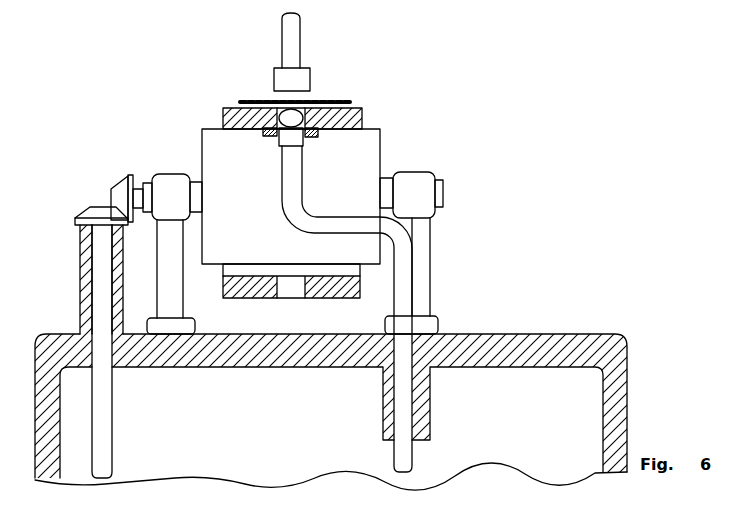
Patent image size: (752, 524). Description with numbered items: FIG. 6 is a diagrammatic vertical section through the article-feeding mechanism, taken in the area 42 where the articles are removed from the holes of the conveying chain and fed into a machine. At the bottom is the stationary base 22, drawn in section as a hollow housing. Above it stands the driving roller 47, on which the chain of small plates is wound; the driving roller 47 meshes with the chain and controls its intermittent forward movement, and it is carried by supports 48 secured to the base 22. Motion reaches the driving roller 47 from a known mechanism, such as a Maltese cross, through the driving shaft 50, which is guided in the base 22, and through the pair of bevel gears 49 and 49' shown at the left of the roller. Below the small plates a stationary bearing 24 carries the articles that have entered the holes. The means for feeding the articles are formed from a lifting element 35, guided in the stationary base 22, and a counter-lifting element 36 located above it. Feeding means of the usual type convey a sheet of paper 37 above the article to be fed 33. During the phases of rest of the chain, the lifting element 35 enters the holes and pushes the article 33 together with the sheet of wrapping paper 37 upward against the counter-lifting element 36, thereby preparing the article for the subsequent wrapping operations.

The stationary base 22 is at (527, 343).
The stationary bearing 24 is at (269, 138).
The article to be fed 33 is at (300, 106).
The lifting element 35 is at (296, 194).
The counter-lifting element 36 is at (292, 44).
The sheet of paper 37 is at (348, 102).
The area 42 is at (259, 79).
The driving roller 47 is at (216, 136).
The supports 48 is at (171, 180).
The bevel gear 49 is at (87, 253).
The bevel gear 49' is at (114, 178).
The driving shaft 50 is at (100, 447).